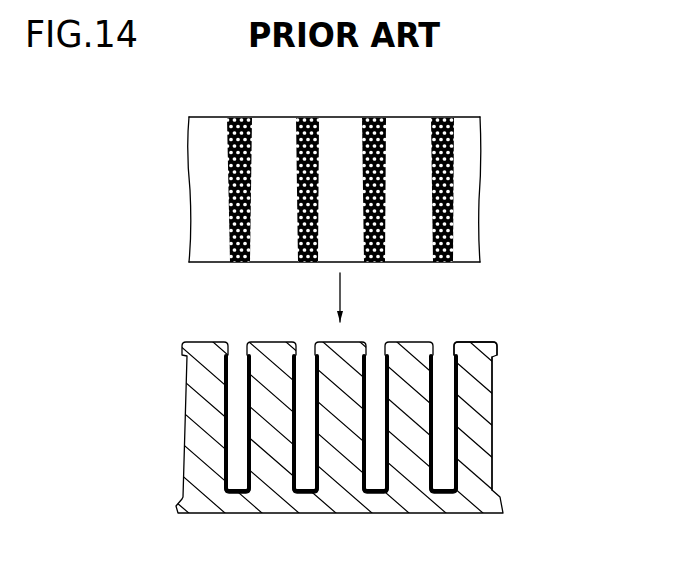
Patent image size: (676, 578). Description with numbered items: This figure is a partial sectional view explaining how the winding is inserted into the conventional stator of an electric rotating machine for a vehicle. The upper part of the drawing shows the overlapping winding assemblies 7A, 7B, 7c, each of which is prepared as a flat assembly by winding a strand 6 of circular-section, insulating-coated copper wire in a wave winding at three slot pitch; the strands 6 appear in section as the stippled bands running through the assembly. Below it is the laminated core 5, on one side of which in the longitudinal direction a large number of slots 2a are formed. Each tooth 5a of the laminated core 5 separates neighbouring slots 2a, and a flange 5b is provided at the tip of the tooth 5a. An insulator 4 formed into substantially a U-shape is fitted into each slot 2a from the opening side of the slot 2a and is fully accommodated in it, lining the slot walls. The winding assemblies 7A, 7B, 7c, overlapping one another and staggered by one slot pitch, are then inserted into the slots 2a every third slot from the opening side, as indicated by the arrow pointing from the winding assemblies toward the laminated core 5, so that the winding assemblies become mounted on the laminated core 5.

The strand 6 is at (453, 158).
The winding assembly 7A is at (408, 189).
The winding assembly 7B is at (408, 189).
The winding assembly 7c is at (408, 189).
The laminated core 5 is at (370, 409).
The tooth 5a is at (481, 401).
The flange 5b is at (496, 343).
The slot 2a is at (389, 366).
The insulator 4 is at (440, 359).